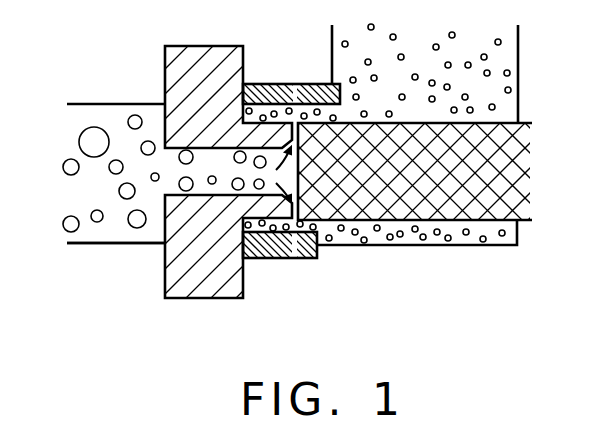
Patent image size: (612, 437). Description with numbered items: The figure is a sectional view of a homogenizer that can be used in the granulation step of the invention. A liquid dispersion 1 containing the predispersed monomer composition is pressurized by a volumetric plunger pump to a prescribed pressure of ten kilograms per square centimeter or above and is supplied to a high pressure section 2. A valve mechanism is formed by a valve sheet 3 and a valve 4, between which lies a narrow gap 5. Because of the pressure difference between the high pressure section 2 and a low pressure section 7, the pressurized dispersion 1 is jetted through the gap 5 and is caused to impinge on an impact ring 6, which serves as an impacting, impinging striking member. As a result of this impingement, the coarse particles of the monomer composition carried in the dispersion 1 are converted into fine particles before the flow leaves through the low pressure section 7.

The liquid dispersion 1 is at (66, 104).
The high pressure section 2 is at (112, 243).
The valve sheet 3 is at (172, 72).
The valve 4 is at (515, 177).
The gap 5 is at (295, 126).
The impact ring 6 is at (270, 84).
The low pressure section 7 is at (505, 63).